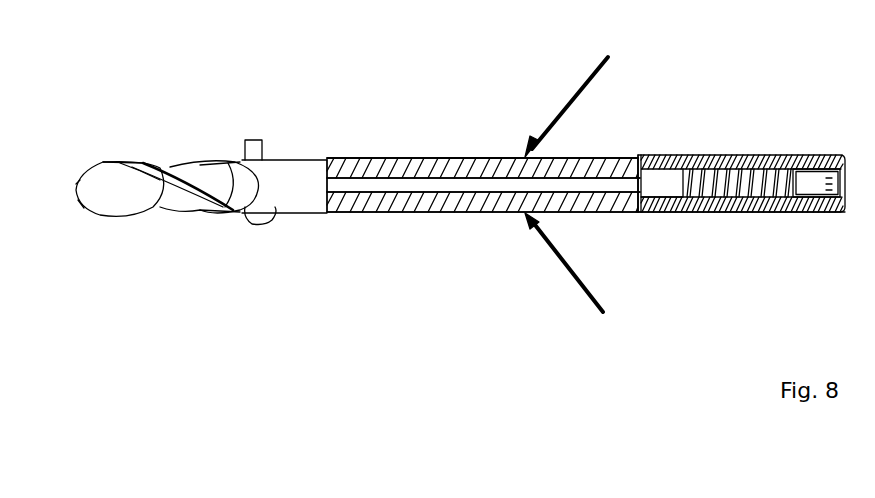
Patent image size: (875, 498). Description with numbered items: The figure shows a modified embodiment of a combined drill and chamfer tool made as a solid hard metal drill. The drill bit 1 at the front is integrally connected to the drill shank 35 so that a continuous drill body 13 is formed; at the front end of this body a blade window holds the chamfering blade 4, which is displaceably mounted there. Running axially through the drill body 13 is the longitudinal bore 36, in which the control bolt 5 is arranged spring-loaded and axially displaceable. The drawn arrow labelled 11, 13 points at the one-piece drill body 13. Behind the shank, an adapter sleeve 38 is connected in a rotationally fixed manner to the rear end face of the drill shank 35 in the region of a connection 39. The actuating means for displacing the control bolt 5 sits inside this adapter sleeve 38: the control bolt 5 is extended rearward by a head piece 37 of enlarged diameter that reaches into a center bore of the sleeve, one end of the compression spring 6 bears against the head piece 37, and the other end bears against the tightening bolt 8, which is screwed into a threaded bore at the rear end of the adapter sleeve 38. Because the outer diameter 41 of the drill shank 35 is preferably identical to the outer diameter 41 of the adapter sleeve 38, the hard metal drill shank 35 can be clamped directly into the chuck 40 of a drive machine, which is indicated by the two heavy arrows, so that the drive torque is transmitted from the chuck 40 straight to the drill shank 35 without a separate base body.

The drill bit 1 is at (95, 177).
The chamfering blade 4 is at (262, 155).
The control bolt 5 is at (570, 185).
The compression spring 6 is at (725, 157).
The tightening bolt 8 is at (806, 178).
The coupling assembly 11 is at (435, 122).
The drill body 13 is at (430, 135).
The drill shank 35 is at (353, 157).
The longitudinal bore 36 is at (483, 157).
The head piece 37 is at (663, 203).
The adapter sleeve 38 is at (737, 213).
The connection 39 is at (630, 157).
The chuck 40 is at (583, 93).
The outer diameter 41 is at (475, 217).